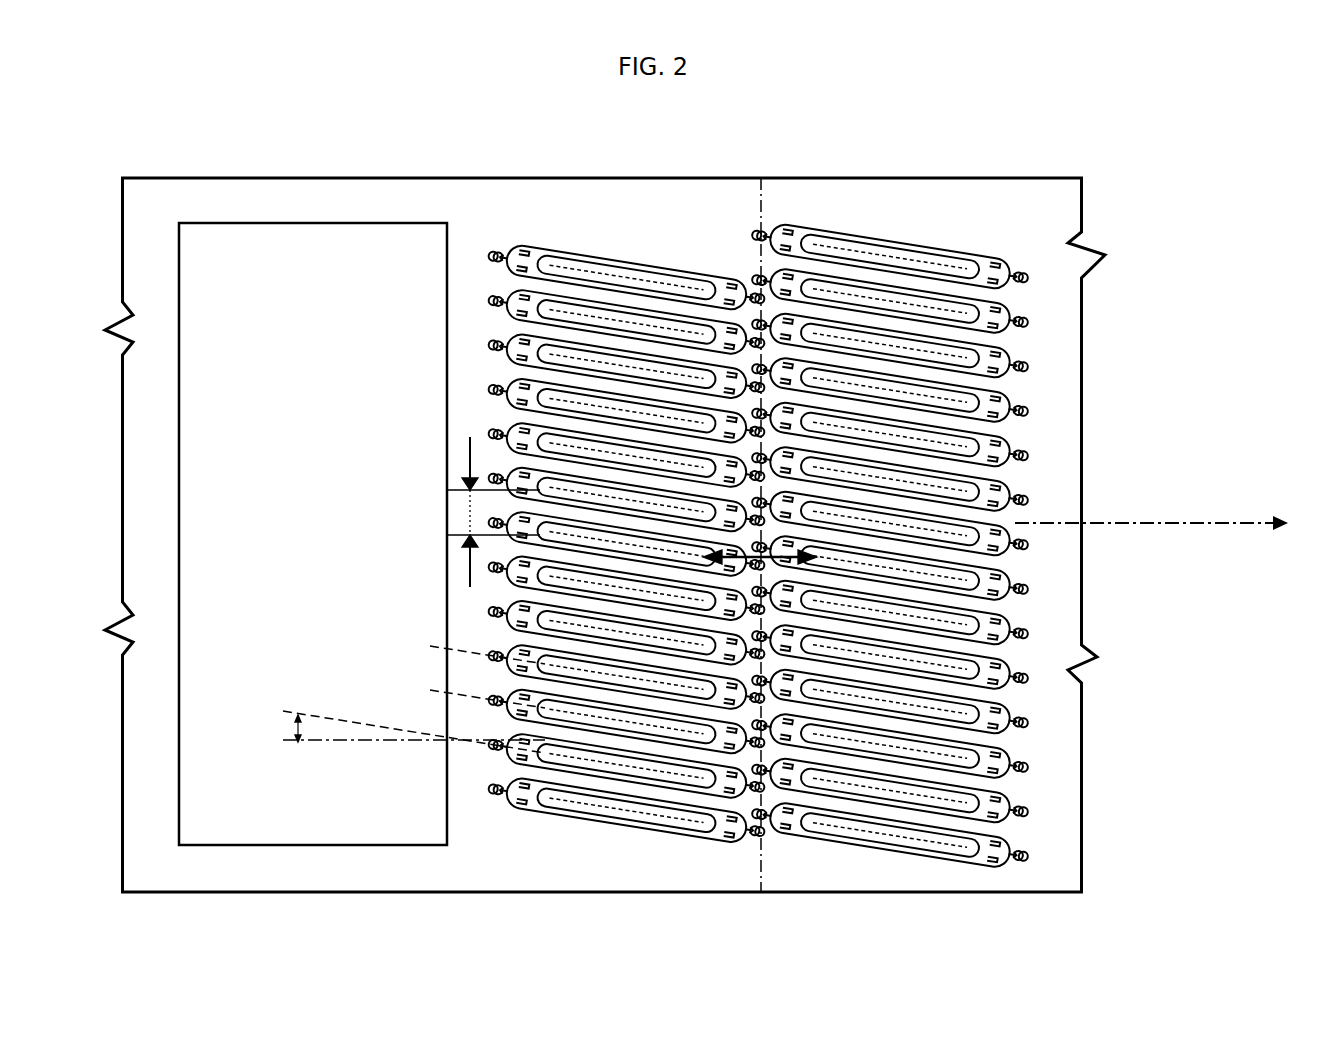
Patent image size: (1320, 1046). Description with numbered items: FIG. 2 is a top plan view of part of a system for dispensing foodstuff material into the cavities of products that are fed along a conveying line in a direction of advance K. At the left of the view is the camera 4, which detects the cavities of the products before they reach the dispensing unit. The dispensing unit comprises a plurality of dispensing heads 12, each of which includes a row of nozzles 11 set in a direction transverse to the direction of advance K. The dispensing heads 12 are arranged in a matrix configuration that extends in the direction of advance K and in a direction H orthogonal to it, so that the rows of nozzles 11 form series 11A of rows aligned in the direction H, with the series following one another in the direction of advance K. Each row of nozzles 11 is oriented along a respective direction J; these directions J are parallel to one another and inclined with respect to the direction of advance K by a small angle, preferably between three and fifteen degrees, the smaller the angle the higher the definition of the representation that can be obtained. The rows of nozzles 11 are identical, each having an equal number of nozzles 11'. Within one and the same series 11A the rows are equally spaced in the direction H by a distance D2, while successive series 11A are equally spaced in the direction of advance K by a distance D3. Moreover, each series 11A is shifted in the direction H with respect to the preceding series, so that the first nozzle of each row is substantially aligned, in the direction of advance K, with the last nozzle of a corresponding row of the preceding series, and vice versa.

The camera 4 is at (262, 255).
The row of nozzles 11 is at (758, 529).
The nozzle 11' is at (969, 611).
The series of rows of nozzles 11A is at (768, 567).
The dispensing head 12 is at (505, 366).
The direction of advance K is at (1120, 522).
The direction H is at (762, 855).
The direction J is at (430, 690).
The distance D2 is at (447, 513).
The distance D3 is at (757, 555).